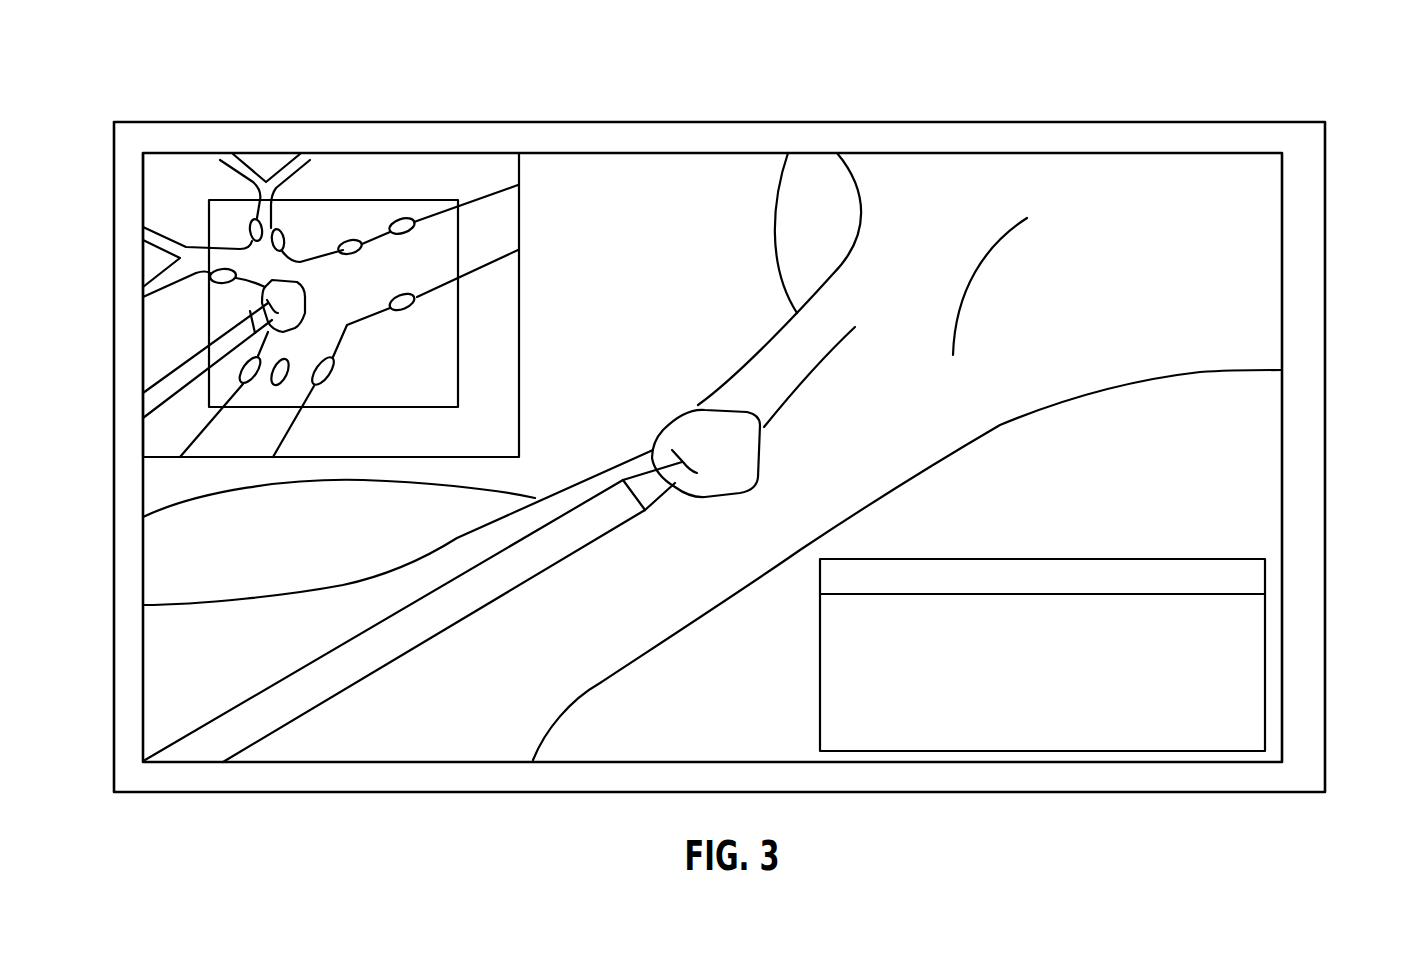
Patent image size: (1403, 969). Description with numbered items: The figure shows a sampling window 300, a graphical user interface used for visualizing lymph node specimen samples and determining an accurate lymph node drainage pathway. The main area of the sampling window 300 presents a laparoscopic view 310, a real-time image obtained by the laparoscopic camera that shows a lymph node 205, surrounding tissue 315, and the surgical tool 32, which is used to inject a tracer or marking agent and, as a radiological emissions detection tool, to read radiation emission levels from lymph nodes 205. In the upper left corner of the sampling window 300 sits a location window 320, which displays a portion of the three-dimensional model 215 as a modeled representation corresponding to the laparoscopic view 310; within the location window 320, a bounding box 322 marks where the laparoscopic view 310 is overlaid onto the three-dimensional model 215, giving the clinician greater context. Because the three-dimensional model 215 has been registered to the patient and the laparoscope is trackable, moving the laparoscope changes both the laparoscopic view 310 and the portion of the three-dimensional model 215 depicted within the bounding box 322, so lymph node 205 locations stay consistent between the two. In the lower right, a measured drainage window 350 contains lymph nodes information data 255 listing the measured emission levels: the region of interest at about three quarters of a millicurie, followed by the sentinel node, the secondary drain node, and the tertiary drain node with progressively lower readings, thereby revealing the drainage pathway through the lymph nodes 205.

The sampling window 300 is at (1018, 73).
The tissue 315 is at (1250, 292).
The laparoscopic view 310 is at (170, 573).
The 3D model 215 is at (178, 172).
The bounding box 322 is at (436, 198).
The location window 320 is at (519, 221).
The lymph node 205 is at (680, 408).
The surgical tool 32 is at (190, 347).
The measured drainage window 350 is at (1085, 550).
The lymph nodes information data 255 is at (807, 592).